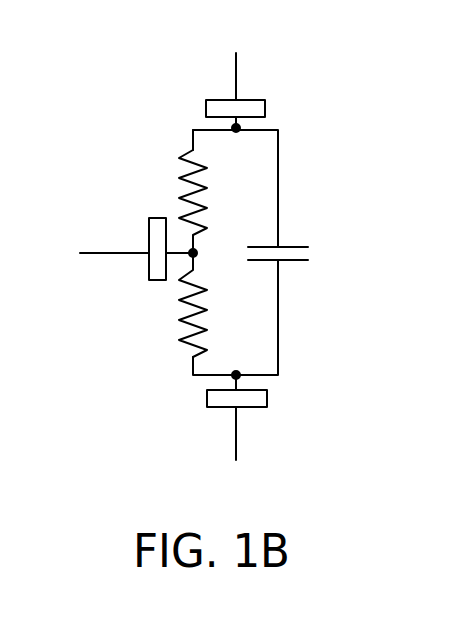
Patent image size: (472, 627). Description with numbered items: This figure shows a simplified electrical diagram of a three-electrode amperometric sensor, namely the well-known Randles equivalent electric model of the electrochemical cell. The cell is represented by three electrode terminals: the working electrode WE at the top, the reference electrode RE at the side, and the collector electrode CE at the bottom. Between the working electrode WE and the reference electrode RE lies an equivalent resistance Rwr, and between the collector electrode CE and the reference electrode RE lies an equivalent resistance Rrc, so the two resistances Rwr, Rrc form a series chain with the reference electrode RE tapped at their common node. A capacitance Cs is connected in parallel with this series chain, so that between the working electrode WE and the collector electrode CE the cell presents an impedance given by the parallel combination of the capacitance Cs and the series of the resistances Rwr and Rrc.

The working electrode WE is at (246, 91).
The reference electrode RE is at (136, 249).
The collector electrode CE is at (247, 417).
The equivalent resistance between working and reference electrodes Rwr is at (222, 201).
The equivalent resistance between collector and reference electrodes Rrc is at (221, 305).
The capacitance Cs is at (288, 238).